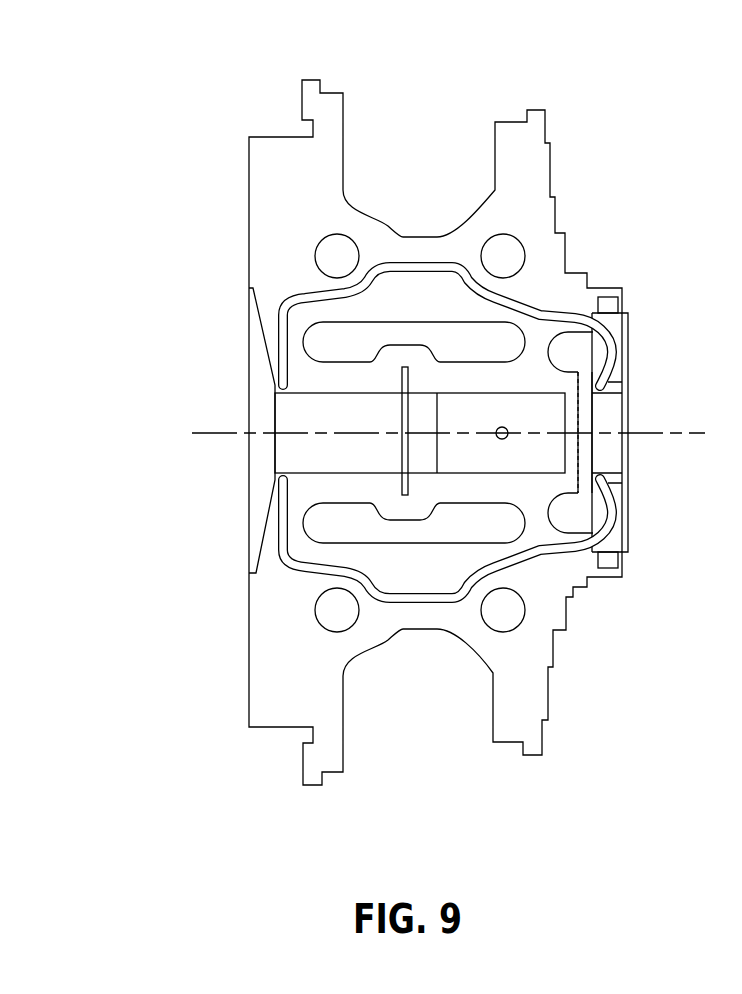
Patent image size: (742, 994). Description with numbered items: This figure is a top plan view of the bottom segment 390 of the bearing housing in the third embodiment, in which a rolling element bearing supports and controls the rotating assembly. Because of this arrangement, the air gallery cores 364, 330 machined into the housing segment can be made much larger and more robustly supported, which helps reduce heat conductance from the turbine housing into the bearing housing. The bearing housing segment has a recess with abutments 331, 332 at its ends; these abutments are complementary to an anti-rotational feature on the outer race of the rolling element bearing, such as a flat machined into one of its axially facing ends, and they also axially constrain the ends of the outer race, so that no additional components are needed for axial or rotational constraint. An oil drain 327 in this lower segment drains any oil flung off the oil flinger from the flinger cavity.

The housing body 390 is at (275, 185).
The abutment 332 is at (445, 415).
The oil drain 327 is at (402, 433).
The air gallery core 330 is at (340, 525).
The air gallery core 364 is at (568, 351).
The abutment 331 is at (563, 414).